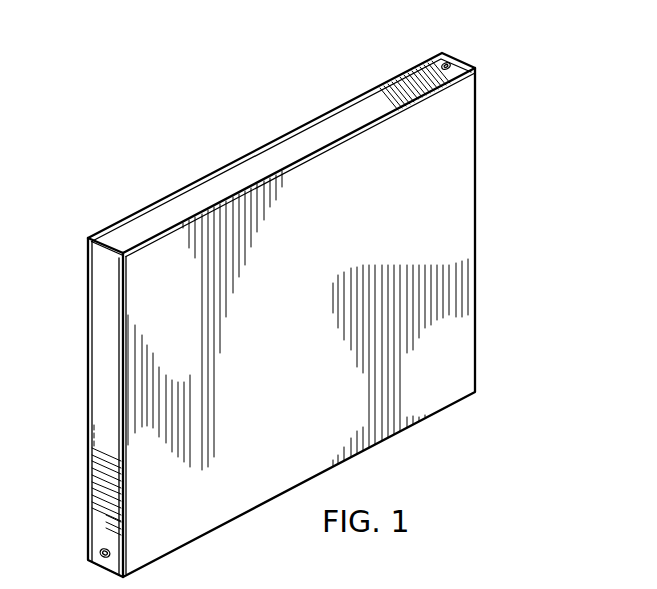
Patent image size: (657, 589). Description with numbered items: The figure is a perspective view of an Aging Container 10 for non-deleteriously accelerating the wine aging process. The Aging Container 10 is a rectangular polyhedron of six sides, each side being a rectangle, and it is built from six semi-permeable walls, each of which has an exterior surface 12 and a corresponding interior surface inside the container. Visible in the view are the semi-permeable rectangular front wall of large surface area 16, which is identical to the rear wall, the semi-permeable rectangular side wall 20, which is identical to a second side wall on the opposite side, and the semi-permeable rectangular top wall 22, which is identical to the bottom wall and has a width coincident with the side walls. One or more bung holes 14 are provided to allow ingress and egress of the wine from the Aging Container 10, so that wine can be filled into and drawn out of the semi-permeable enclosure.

The Aging Container 10 is at (578, 73).
The exterior surface 12 is at (289, 167).
The bung holes 14 is at (451, 62).
The semi-permeable rectangular front wall of large surface area 16 is at (462, 224).
The semi-permeable rectangular side wall 20 is at (102, 398).
The semi-permeable rectangular top wall 22 is at (378, 105).